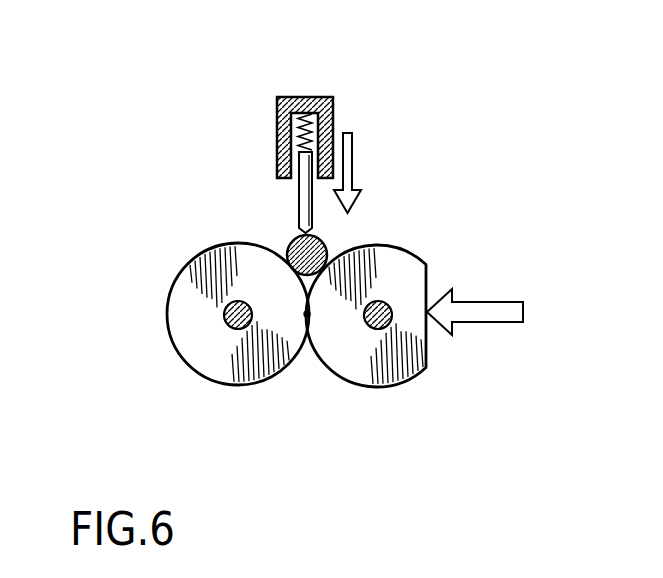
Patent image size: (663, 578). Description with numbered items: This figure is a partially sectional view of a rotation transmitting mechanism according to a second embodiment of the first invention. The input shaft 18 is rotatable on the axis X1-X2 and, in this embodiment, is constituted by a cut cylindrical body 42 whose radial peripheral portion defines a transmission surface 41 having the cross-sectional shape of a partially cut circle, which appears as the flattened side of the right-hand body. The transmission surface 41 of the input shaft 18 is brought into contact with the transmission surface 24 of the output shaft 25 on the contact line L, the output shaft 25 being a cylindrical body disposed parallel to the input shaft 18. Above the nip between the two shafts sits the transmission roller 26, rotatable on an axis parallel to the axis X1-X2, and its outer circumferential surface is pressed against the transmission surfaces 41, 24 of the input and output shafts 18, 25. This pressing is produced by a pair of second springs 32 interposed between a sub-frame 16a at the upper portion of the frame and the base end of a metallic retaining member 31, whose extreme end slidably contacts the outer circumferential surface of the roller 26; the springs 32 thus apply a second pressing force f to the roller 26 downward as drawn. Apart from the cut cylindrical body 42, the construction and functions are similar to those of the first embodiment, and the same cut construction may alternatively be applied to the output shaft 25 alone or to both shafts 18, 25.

The sub-frame 16a is at (300, 106).
The second springs 32 is at (259, 138).
The retaining member 31 is at (243, 192).
The transmission roller 26 is at (262, 237).
The transmission surface 24 is at (203, 308).
The output shaft 25 is at (148, 322).
The input shaft 18 is at (402, 281).
The transmission surface 41 is at (389, 211).
The cut cylindrical body 42 is at (379, 435).
The contact line L is at (305, 374).
The second pressing force f is at (347, 157).
The axis X1-X2 is at (460, 337).